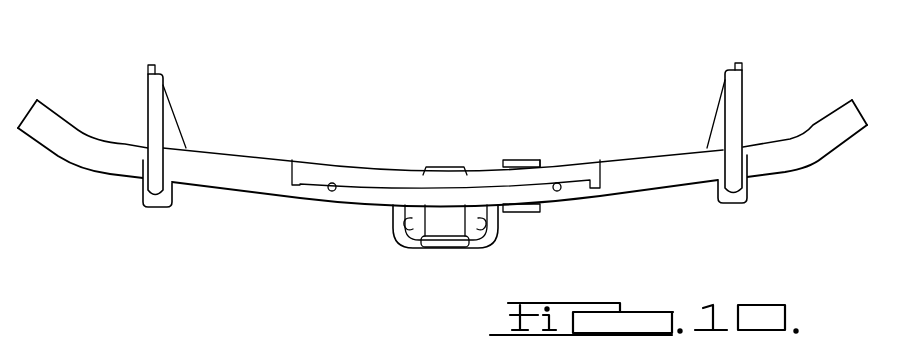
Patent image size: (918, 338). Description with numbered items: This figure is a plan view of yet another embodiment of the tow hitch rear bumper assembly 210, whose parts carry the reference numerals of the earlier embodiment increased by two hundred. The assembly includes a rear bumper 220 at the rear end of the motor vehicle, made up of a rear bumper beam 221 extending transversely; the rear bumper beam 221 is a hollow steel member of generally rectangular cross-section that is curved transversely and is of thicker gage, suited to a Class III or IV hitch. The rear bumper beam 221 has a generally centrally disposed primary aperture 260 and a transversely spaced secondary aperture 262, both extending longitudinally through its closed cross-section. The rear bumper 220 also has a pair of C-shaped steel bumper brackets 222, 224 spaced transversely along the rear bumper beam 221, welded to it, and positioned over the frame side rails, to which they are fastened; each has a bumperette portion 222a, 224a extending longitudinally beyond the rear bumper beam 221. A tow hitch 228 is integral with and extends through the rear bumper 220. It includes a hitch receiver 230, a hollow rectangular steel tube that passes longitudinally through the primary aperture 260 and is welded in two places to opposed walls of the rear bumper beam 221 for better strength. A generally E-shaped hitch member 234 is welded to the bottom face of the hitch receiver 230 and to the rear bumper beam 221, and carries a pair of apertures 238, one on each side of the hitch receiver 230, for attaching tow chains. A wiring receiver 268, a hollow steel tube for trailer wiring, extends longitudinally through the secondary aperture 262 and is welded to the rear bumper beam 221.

The tow hitch rear bumper assembly 210 is at (442, 170).
The rear bumper 220 is at (643, 197).
The rear bumper beam 221 is at (648, 163).
The bumper bracket 222 is at (727, 80).
The bumperette portion 222a is at (733, 192).
The bumper bracket 224 is at (148, 85).
The bumperette portion 224a is at (157, 195).
The tow hitch 228 is at (413, 253).
The hitch receiver 230 is at (443, 227).
The hitch member 234 is at (477, 242).
The apertures 238 is at (405, 223).
The primary aperture 260 is at (426, 168).
The secondary aperture 262 is at (543, 162).
The wiring receiver 268 is at (510, 160).